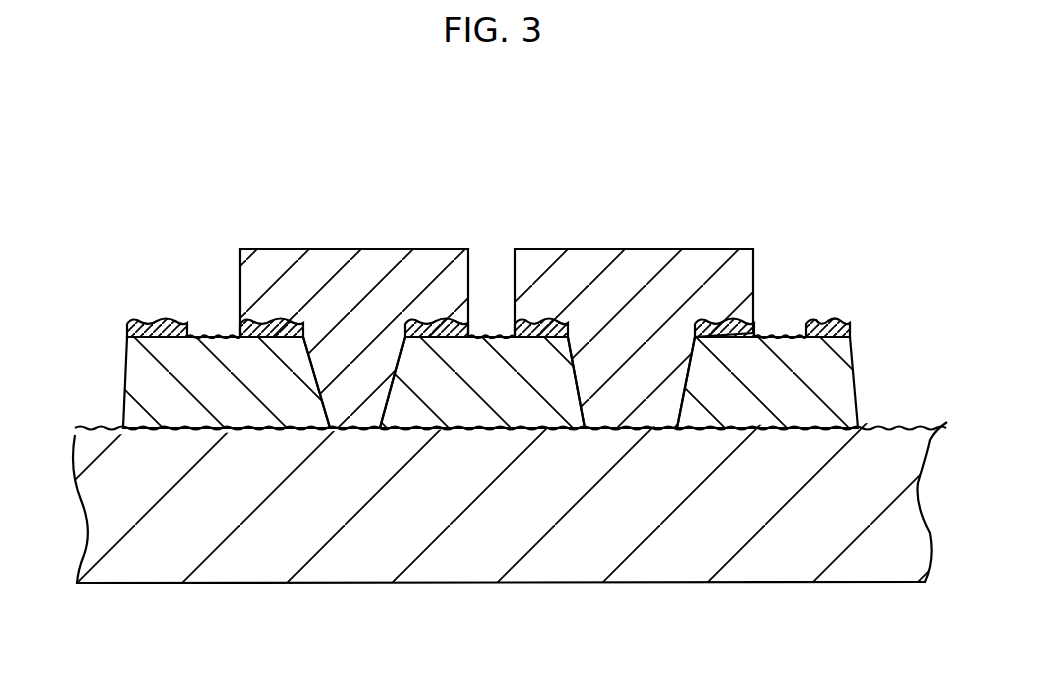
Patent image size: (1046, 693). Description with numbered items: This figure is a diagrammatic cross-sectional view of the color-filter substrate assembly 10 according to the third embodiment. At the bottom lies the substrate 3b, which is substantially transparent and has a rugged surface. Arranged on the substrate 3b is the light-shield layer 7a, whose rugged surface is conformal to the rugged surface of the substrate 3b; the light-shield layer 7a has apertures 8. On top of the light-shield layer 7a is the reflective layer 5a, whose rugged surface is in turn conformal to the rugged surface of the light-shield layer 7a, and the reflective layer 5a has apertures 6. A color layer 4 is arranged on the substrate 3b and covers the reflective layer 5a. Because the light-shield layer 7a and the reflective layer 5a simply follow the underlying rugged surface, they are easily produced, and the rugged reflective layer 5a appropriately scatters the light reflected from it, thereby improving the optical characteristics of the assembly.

The color-filter substrate assembly 10 is at (501, 372).
The color layer 4 is at (367, 270).
The reflective layer 5a is at (167, 318).
The apertures 6 is at (212, 325).
The light-shield layer 7a is at (137, 373).
The apertures 8 is at (353, 437).
The substrate 3b is at (709, 550).